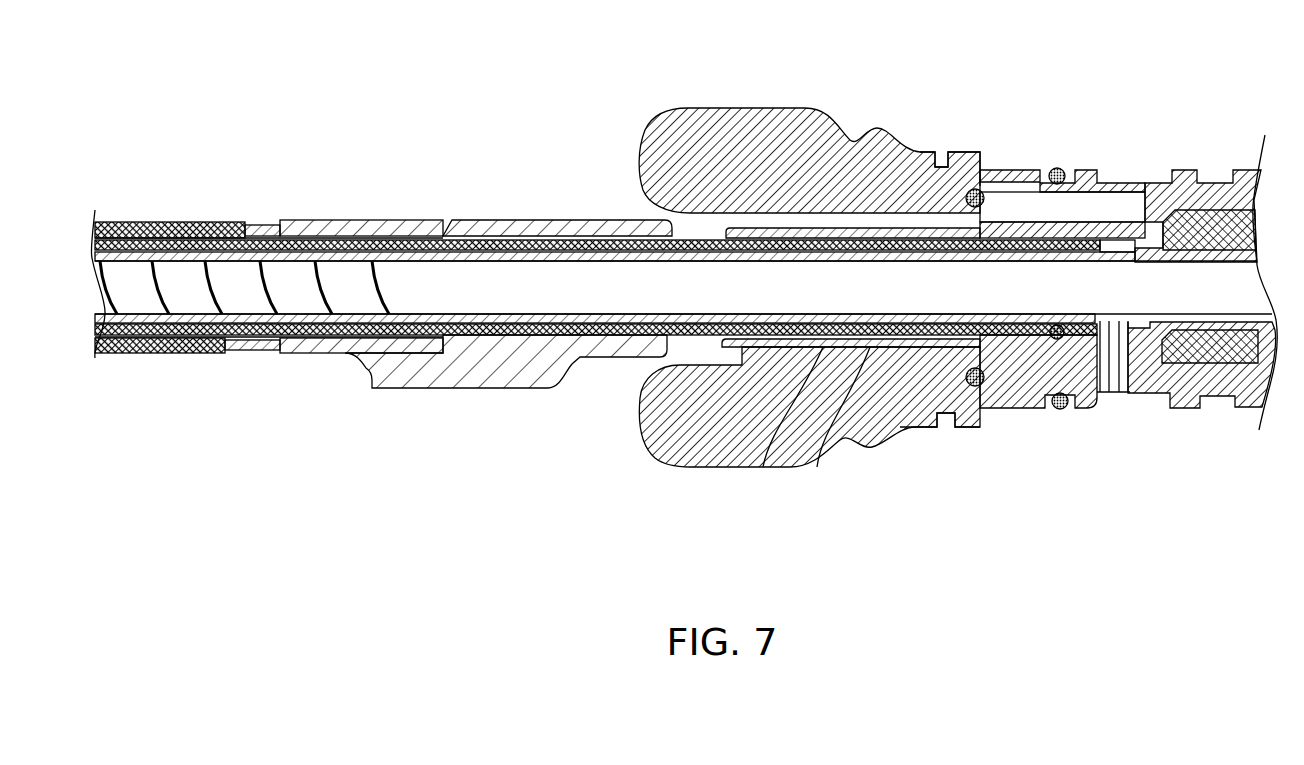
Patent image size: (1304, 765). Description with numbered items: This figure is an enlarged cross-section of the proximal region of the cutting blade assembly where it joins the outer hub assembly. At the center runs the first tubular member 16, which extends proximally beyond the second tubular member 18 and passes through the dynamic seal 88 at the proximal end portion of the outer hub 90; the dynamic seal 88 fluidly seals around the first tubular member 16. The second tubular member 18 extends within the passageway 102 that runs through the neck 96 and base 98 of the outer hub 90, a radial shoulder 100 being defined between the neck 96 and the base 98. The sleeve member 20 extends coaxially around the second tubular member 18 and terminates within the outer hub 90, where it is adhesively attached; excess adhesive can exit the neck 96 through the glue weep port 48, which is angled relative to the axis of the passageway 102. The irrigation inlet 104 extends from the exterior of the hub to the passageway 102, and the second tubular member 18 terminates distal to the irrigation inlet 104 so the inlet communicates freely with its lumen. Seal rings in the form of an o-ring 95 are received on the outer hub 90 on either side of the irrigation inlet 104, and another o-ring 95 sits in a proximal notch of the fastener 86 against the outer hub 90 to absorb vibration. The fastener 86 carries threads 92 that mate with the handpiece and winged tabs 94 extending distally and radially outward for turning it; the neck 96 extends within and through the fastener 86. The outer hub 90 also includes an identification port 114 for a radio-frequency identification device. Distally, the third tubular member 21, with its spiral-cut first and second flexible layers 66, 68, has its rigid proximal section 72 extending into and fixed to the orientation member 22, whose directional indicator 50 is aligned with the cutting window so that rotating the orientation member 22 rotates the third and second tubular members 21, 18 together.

The first tubular member 16 is at (493, 250).
The second tubular member 18 is at (550, 245).
The sleeve member 20 is at (693, 230).
The third tubular member 21 is at (158, 363).
The orientation member 22 is at (362, 368).
The glue weep port 48 is at (766, 467).
The directional indicator 50 is at (490, 388).
The first flexible layer 66 is at (228, 226).
The second flexible layer 68 is at (222, 222).
The proximal section 72 is at (388, 228).
The fastener 86 is at (715, 467).
The dynamic seal 88 is at (1232, 408).
The outer hub 90 is at (1020, 408).
The threads 92 is at (958, 151).
The winged tabs 94 is at (785, 108).
The o-ring 95 is at (979, 386).
The neck 96 is at (817, 467).
The base 98 is at (1182, 385).
The radial shoulder 100 is at (926, 428).
The passageway 102 is at (1113, 377).
The irrigation inlet 104 is at (1120, 392).
The identification port 114 is at (1127, 205).